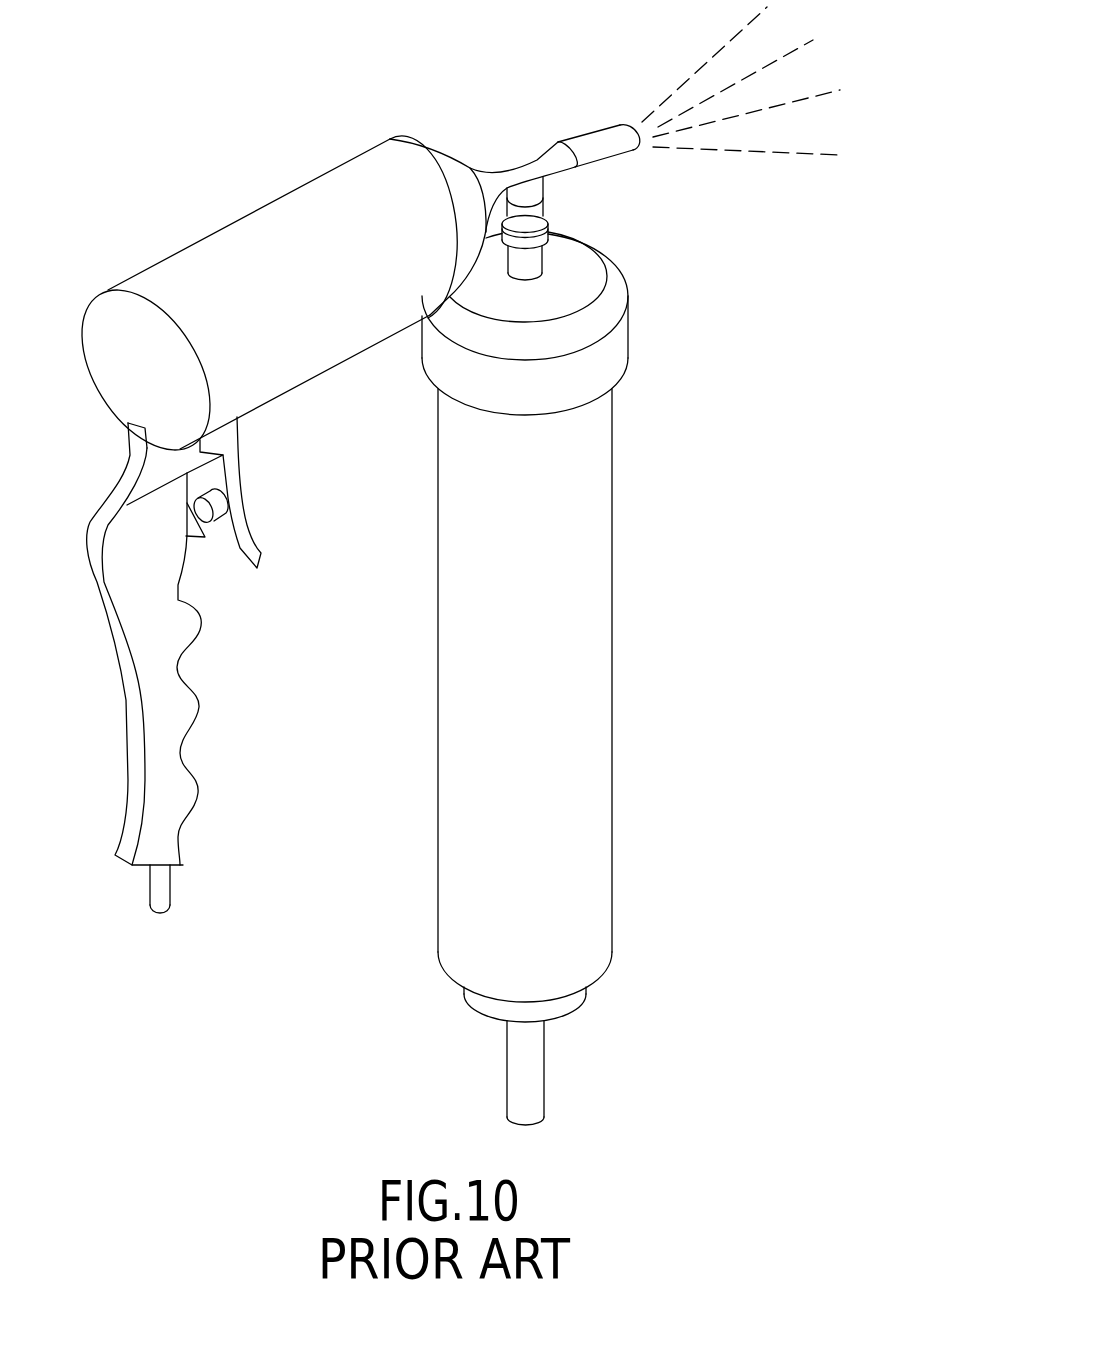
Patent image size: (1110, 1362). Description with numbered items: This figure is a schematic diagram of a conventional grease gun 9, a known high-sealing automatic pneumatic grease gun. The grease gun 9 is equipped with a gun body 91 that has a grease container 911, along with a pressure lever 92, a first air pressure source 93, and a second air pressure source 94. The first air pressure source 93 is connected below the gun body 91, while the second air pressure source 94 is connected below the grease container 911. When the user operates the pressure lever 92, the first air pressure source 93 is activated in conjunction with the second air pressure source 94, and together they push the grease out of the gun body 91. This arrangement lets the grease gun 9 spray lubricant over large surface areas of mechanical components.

The grease gun 9 is at (186, 86).
The gun body 91 is at (201, 236).
The grease container 911 is at (580, 533).
The pressure lever 92 is at (243, 493).
The first air pressure source 93 is at (160, 888).
The second air pressure source 94 is at (544, 1065).